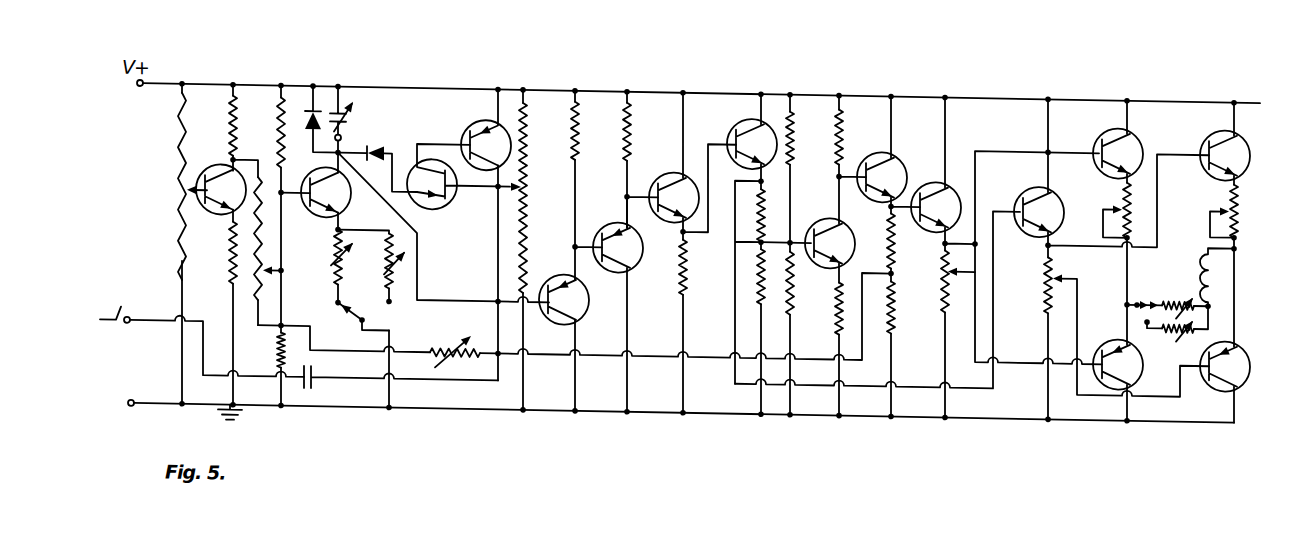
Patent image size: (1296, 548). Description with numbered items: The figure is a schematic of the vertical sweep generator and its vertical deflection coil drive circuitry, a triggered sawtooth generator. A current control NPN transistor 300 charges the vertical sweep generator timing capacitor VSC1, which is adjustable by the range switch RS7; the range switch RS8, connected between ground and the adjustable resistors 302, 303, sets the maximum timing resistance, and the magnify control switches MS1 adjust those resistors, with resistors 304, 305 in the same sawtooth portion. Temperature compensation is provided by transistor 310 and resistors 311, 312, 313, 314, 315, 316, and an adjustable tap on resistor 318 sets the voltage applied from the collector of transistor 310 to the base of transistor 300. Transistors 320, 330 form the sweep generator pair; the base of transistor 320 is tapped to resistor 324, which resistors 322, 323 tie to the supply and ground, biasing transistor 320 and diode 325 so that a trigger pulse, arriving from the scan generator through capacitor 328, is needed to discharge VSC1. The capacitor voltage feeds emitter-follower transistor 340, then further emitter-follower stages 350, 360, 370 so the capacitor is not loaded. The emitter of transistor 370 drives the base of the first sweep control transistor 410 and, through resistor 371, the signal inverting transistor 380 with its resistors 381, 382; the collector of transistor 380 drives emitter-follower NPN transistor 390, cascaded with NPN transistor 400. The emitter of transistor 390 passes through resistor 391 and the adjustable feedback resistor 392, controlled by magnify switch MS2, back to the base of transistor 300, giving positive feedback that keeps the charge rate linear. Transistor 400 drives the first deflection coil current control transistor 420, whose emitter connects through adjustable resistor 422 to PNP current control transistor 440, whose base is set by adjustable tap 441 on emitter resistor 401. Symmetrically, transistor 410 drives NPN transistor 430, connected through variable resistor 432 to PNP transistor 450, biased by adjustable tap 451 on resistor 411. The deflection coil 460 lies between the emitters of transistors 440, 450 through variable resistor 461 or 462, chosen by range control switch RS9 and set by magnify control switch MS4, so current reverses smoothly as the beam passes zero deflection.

The current control NPN transistor 300 is at (318, 211).
The adjustable resistor 302 is at (331, 263).
The adjustable resistor 303 is at (403, 270).
The resistor 304 is at (279, 148).
The resistor 305 is at (281, 350).
The transistor 310 is at (213, 166).
The resistor 311 is at (233, 275).
The resistor 312 is at (253, 131).
The resistor 313 is at (245, 222).
The resistor 314 is at (180, 126).
The resistor 315 is at (180, 255).
The resistor 316 is at (186, 191).
The resistor 318 is at (256, 295).
The transistor 320 is at (440, 204).
The resistor 322 is at (532, 118).
The resistor 323 is at (530, 246).
The resistor 324 is at (531, 214).
The diode 325 is at (430, 127).
The capacitor 328 is at (316, 370).
The transistor 330 is at (488, 114).
The transistor 340 is at (585, 308).
The transistor 350 is at (633, 265).
The transistor 360 is at (666, 170).
The transistor 370 is at (747, 118).
The resistor 371 is at (768, 190).
The signal inverting transistor 380 is at (818, 218).
The resistor 381 is at (792, 120).
The resistor 382 is at (788, 296).
The NPN transistor 390 is at (872, 142).
The resistor 391 is at (886, 236).
The feedback resistor 392 is at (455, 362).
The NPN transistor 400 is at (930, 170).
The emitter resistor 401 is at (886, 290).
The first sweep control transistor 410 is at (1024, 178).
The resistor 411 is at (1040, 270).
The first deflection coil current control transistor 420 is at (1098, 120).
The adjustable resistor 422 is at (1124, 172).
The NPN transistor 430 is at (1242, 122).
The variable resistor 432 is at (1243, 200).
The PNP current control transistor 440 is at (1102, 326).
The adjustable tap 441 is at (952, 262).
The PNP transistor 450 is at (1234, 382).
The adjustable tap 451 is at (1065, 262).
The deflection coil 460 is at (1213, 270).
The variable resistor 461 is at (1190, 290).
The variable resistor 462 is at (1195, 310).
The range switch RS7 is at (356, 100).
The range switch RS8 is at (348, 322).
The range control switch RS9 is at (1140, 284).
The magnify control switches MS1 is at (363, 294).
The magnify switch MS2 is at (462, 340).
The magnify control switch MS4 is at (1171, 335).
The vertical sweep generator timing capacitor VSC1 is at (350, 120).